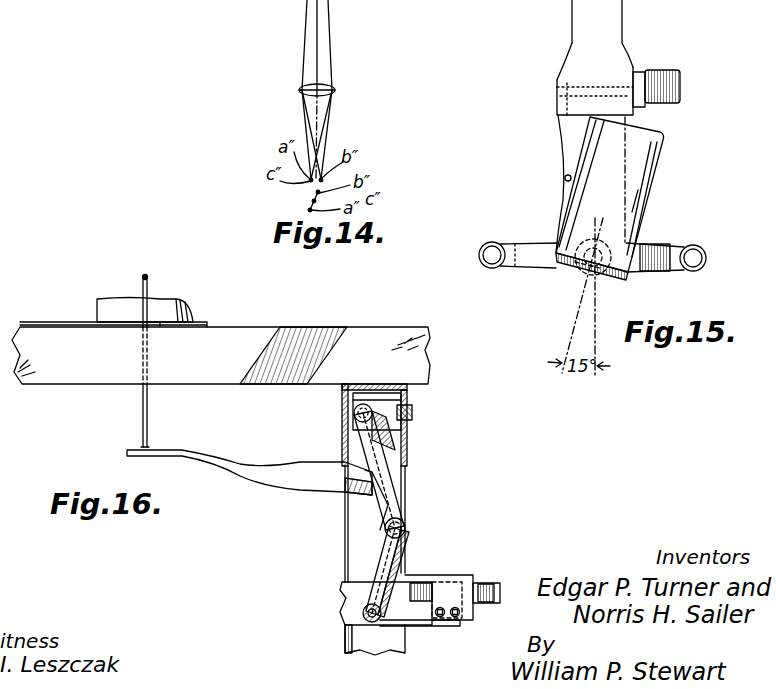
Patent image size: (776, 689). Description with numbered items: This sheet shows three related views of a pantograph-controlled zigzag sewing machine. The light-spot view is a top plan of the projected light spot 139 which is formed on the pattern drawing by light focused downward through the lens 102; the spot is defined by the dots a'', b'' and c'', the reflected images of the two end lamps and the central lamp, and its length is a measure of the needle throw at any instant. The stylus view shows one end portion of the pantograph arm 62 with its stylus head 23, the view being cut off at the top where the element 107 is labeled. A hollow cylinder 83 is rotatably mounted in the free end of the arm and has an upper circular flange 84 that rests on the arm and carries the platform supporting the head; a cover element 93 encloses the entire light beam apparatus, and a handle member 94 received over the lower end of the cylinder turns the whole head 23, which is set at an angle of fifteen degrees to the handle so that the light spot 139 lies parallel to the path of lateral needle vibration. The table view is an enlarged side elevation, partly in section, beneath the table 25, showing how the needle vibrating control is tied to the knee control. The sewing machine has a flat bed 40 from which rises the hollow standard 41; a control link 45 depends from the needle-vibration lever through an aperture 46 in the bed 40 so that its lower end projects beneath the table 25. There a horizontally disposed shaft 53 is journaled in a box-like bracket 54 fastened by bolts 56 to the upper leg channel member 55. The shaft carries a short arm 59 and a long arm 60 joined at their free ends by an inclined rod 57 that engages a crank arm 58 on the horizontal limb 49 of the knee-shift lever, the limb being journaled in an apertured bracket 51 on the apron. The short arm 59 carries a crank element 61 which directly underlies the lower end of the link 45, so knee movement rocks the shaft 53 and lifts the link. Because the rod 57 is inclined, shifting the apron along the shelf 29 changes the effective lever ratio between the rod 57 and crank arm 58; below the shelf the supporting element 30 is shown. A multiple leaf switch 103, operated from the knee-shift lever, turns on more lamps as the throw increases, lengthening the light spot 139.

In FIG. 14, the lens 102 is at (335, 88).
In FIG. 14, the projected light spot 139 is at (321, 178).
In FIG. 15, the housing 107 is at (706, 5).
In FIG. 15, the pantograph arm 62 is at (613, 40).
In FIG. 15, the stylus head 23 is at (674, 177).
In FIG. 15, the cover element 93 is at (632, 212).
In FIG. 15, the handle member 94 is at (670, 248).
In FIG. 15, the hollow cylinder 83 is at (571, 276).
In FIG. 15, the upper circular flange 84 is at (612, 282).
In FIG. 16, the table 25 is at (372, 327).
In FIG. 16, the flat bed 40 is at (46, 322).
In FIG. 16, the hollow standard 41 is at (192, 318).
In FIG. 16, the control link 45 is at (142, 287).
In FIG. 16, the aperture 46 is at (153, 322).
In FIG. 16, the crank element 61 is at (214, 460).
In FIG. 16, the upper leg channel member 55 is at (408, 457).
In FIG. 16, the box-like bracket 54 is at (395, 428).
In FIG. 16, the bolts 56 is at (412, 418).
In FIG. 16, the horizontally disposed shaft 53 is at (354, 414).
In FIG. 16, the short arm 59 is at (405, 520).
In FIG. 16, the long arm 60 is at (373, 512).
In FIG. 16, the rod 57 is at (377, 557).
In FIG. 16, the crank arm 58 is at (397, 563).
In FIG. 16, the shelf 29 is at (342, 598).
In FIG. 16, the horizontal limb 49 is at (362, 613).
In FIG. 16, the multiple leaf switch 103 is at (460, 575).
In FIG. 16, the apertured bracket 51 is at (455, 624).
In FIG. 16, the post 30 is at (405, 650).